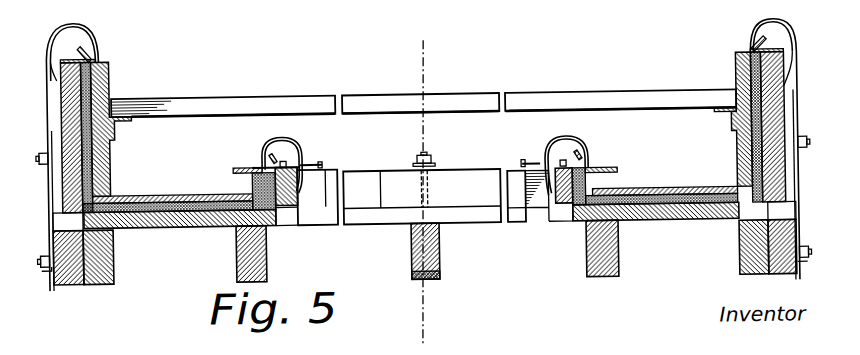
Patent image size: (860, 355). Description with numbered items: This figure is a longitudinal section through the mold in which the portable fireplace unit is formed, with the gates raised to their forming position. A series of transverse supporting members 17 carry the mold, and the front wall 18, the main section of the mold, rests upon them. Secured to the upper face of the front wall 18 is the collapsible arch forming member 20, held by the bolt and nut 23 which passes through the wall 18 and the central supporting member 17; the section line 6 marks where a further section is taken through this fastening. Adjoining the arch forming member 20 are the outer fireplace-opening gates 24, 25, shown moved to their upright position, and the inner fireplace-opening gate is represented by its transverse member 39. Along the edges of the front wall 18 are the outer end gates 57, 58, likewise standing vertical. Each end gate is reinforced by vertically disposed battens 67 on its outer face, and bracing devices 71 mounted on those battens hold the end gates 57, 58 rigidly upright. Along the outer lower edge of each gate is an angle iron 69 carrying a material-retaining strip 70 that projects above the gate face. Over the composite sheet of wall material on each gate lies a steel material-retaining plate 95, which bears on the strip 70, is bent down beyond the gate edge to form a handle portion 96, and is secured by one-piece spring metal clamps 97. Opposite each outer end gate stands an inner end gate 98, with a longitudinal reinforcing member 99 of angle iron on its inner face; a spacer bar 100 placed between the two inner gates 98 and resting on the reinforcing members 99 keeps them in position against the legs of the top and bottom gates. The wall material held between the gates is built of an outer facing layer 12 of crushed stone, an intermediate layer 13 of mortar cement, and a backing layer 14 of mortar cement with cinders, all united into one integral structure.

The material-retaining strip 70 is at (69, 60).
The handle portion 96 is at (81, 34).
The spring metal clamp 97 is at (100, 46).
The angle iron 69 is at (56, 78).
The material-retaining plate 95 is at (97, 60).
The outer end gate 57 is at (72, 97).
The outer end gate 58 is at (773, 97).
The batten 67 is at (52, 138).
The inner end gate 98 is at (112, 155).
The longitudinal reinforcing member 99 is at (718, 123).
The bracing device 71 is at (48, 192).
The transverse supporting member 17 is at (88, 286).
The front wall 18 is at (150, 230).
The backing layer 14 is at (643, 198).
The intermediate layer 13 is at (670, 207).
The spacer bar 100 is at (275, 107).
The transverse member 39 is at (236, 174).
The outer fireplace-opening gate 24 is at (298, 199).
The arch forming member 20 is at (466, 173).
The bolt and nut 23 is at (421, 160).
The section line 6- 6 is at (400, 55).
The outer layer 12 is at (646, 212).
The outer fireplace-opening gate 25 is at (555, 202).